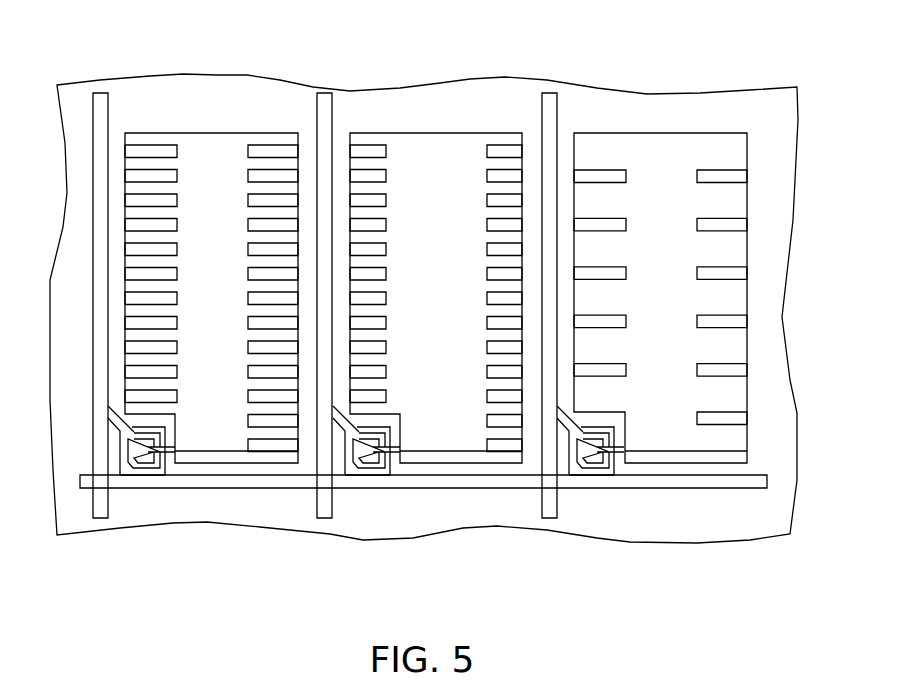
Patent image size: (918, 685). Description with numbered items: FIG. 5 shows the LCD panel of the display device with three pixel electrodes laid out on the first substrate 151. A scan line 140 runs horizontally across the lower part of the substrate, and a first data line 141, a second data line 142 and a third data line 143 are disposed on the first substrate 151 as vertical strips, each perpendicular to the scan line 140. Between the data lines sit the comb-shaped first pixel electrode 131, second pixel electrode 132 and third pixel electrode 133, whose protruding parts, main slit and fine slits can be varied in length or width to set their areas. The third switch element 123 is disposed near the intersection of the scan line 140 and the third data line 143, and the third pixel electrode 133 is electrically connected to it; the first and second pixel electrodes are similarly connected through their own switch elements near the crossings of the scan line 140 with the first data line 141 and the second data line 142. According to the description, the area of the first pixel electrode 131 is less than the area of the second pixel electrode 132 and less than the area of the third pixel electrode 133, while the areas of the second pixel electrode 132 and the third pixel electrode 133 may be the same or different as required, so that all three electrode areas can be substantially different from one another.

The third switch element 123 is at (597, 475).
The first pixel electrode 131 is at (212, 133).
The second pixel electrode 132 is at (435, 133).
The third pixel electrode 133 is at (660, 133).
The scan line 140 is at (752, 490).
The first data line 141 is at (102, 518).
The second data line 142 is at (325, 518).
The third data line 143 is at (547, 518).
The first substrate 151 is at (425, 540).